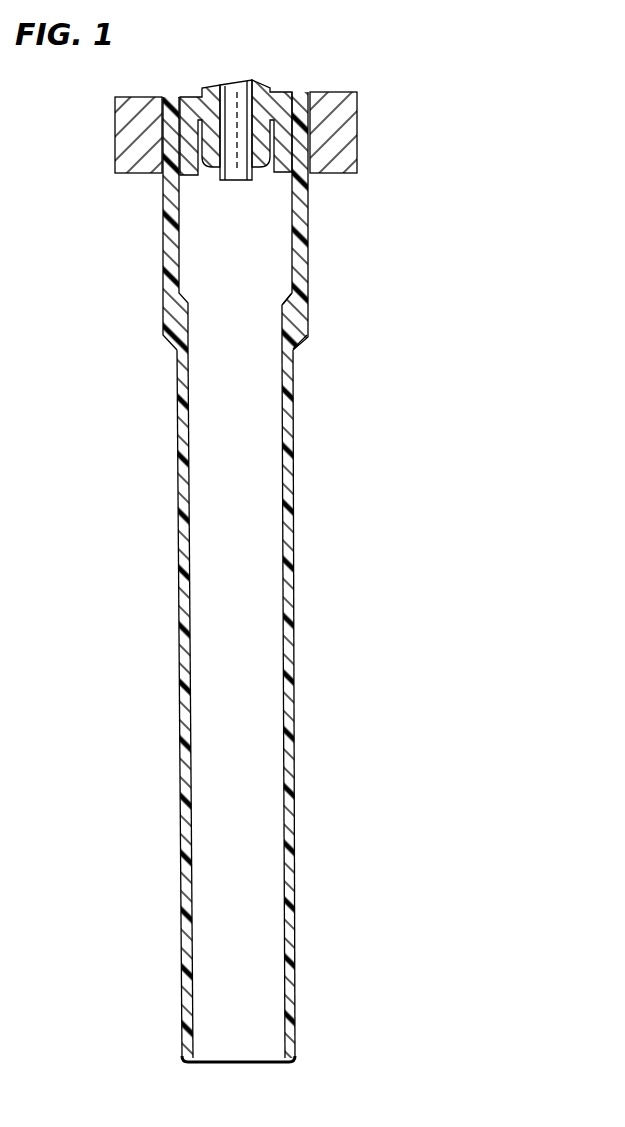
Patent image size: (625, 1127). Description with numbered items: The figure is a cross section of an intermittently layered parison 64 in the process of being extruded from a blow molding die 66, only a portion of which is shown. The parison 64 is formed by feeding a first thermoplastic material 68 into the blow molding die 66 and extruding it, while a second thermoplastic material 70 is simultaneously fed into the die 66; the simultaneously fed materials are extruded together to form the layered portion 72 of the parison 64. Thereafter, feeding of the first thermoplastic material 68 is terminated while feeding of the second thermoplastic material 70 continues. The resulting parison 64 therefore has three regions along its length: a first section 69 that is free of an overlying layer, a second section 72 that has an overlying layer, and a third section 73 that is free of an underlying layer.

The layered parison 64 is at (312, 567).
The blow molding die 66 is at (335, 128).
The first thermoplastic material 68 is at (290, 397).
The first section 69 is at (163, 1063).
The second thermoplastic material 70 is at (300, 245).
The layered portion 72 is at (318, 285).
The third section 73 is at (150, 182).